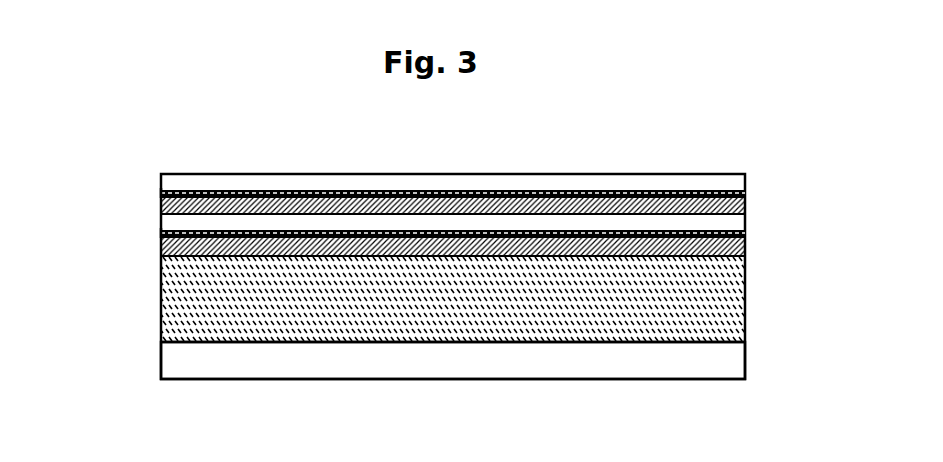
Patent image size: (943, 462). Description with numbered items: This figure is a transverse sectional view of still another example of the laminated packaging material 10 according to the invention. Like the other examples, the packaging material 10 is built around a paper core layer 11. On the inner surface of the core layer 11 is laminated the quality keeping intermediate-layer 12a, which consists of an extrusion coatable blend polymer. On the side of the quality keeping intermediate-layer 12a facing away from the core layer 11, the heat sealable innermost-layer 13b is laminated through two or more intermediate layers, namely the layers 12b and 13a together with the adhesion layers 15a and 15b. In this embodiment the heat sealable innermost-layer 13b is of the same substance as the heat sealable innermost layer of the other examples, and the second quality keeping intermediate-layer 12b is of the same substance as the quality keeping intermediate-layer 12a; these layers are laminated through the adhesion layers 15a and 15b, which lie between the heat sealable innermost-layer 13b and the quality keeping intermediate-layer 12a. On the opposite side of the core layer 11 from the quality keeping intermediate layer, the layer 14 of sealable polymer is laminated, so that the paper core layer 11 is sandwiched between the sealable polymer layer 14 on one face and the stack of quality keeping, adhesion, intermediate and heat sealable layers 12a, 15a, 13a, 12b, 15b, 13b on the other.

The laminated packaging material 10 is at (448, 242).
The paper core layer 11 is at (740, 300).
The quality keeping intermediate-layer 12a is at (745, 255).
The second quality keeping intermediate-layer 12b is at (745, 210).
The intermediate layer 13a is at (734, 222).
The heat sealable innermost-layer 13b is at (729, 183).
The layer of sealable polymer 14 is at (740, 365).
The adhesion layer 15a is at (161, 233).
The adhesion layer 15b is at (161, 190).